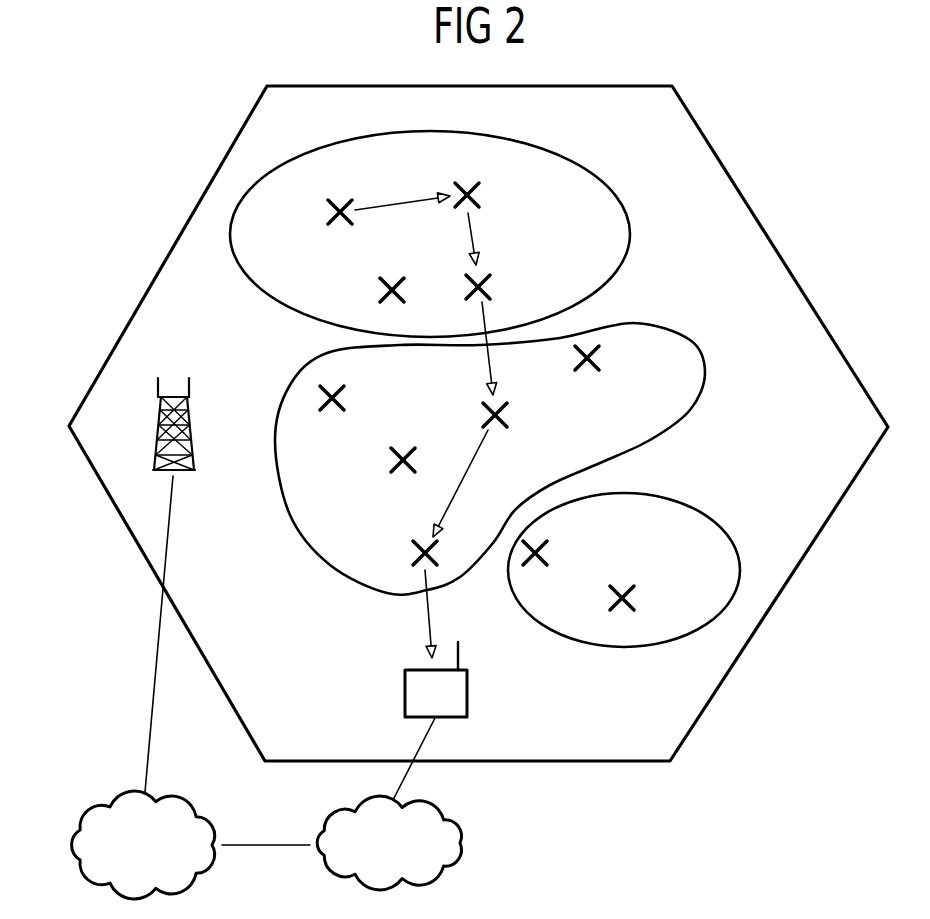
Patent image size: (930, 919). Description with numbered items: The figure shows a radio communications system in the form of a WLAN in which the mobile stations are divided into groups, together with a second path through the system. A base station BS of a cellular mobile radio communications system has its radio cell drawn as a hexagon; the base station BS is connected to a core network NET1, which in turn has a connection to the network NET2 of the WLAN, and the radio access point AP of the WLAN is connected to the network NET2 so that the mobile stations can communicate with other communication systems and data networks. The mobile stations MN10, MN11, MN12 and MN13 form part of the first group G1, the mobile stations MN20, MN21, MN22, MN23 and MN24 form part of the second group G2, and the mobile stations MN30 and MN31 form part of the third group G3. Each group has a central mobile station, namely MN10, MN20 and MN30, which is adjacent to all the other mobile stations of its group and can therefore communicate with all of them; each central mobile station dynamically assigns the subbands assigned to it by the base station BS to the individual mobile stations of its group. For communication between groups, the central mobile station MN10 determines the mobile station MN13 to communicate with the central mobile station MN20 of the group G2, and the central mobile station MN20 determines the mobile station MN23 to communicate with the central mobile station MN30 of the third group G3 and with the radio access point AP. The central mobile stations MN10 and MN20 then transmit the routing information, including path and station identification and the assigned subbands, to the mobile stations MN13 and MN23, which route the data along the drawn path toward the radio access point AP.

The central mobile station MN10 is at (468, 177).
The mobile station MN11 is at (341, 193).
The mobile station MN12 is at (352, 291).
The mobile station MN13 is at (519, 286).
The central mobile station MN20 is at (536, 416).
The mobile station MN21 is at (362, 459).
The mobile station MN22 is at (374, 397).
The mobile station MN23 is at (384, 552).
The mobile station MN24 is at (629, 357).
The central mobile station MN30 is at (577, 552).
The mobile station MN31 is at (664, 599).
The first group G1 is at (629, 233).
The second group G2 is at (705, 378).
The third group G3 is at (720, 527).
The base station BS is at (157, 424).
The radio access point AP is at (436, 679).
The core network NET1 is at (143, 845).
The network NET2 is at (389, 843).